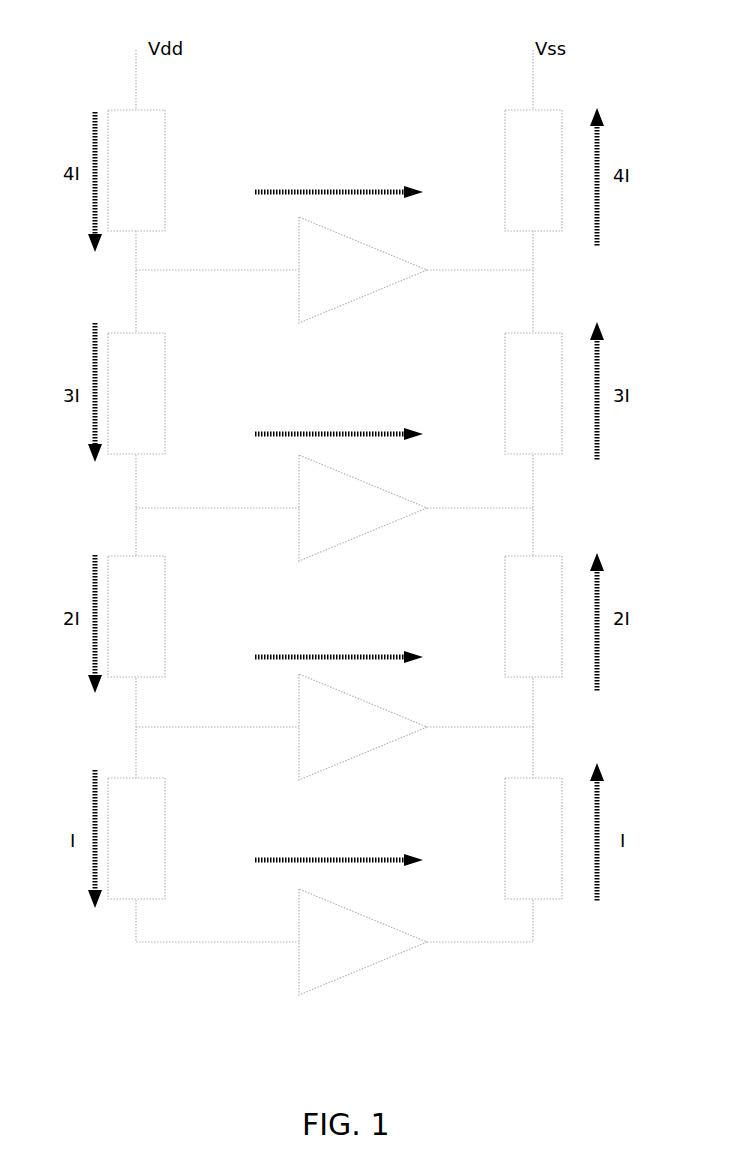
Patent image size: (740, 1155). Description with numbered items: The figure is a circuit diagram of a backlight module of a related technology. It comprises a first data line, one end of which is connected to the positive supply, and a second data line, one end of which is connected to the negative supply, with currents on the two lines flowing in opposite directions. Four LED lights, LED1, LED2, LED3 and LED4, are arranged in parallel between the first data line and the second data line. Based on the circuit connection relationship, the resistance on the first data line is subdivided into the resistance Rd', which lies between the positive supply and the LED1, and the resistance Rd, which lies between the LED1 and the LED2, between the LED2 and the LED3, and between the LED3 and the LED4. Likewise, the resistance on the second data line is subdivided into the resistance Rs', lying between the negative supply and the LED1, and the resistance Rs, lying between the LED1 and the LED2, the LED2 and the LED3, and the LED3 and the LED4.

The resistance between VDD and LED1 Rd' is at (136, 170).
The resistance between VSS and LED1 Rs' is at (533, 170).
The resistance on first data line between adjacent LEDs Rd is at (136, 616).
The resistance on second data line between adjacent LEDs Rs is at (533, 616).
The LED light LED1 is at (363, 270).
The LED light LED2 is at (363, 508).
The LED light LED3 is at (363, 727).
The LED light LED4 is at (363, 942).